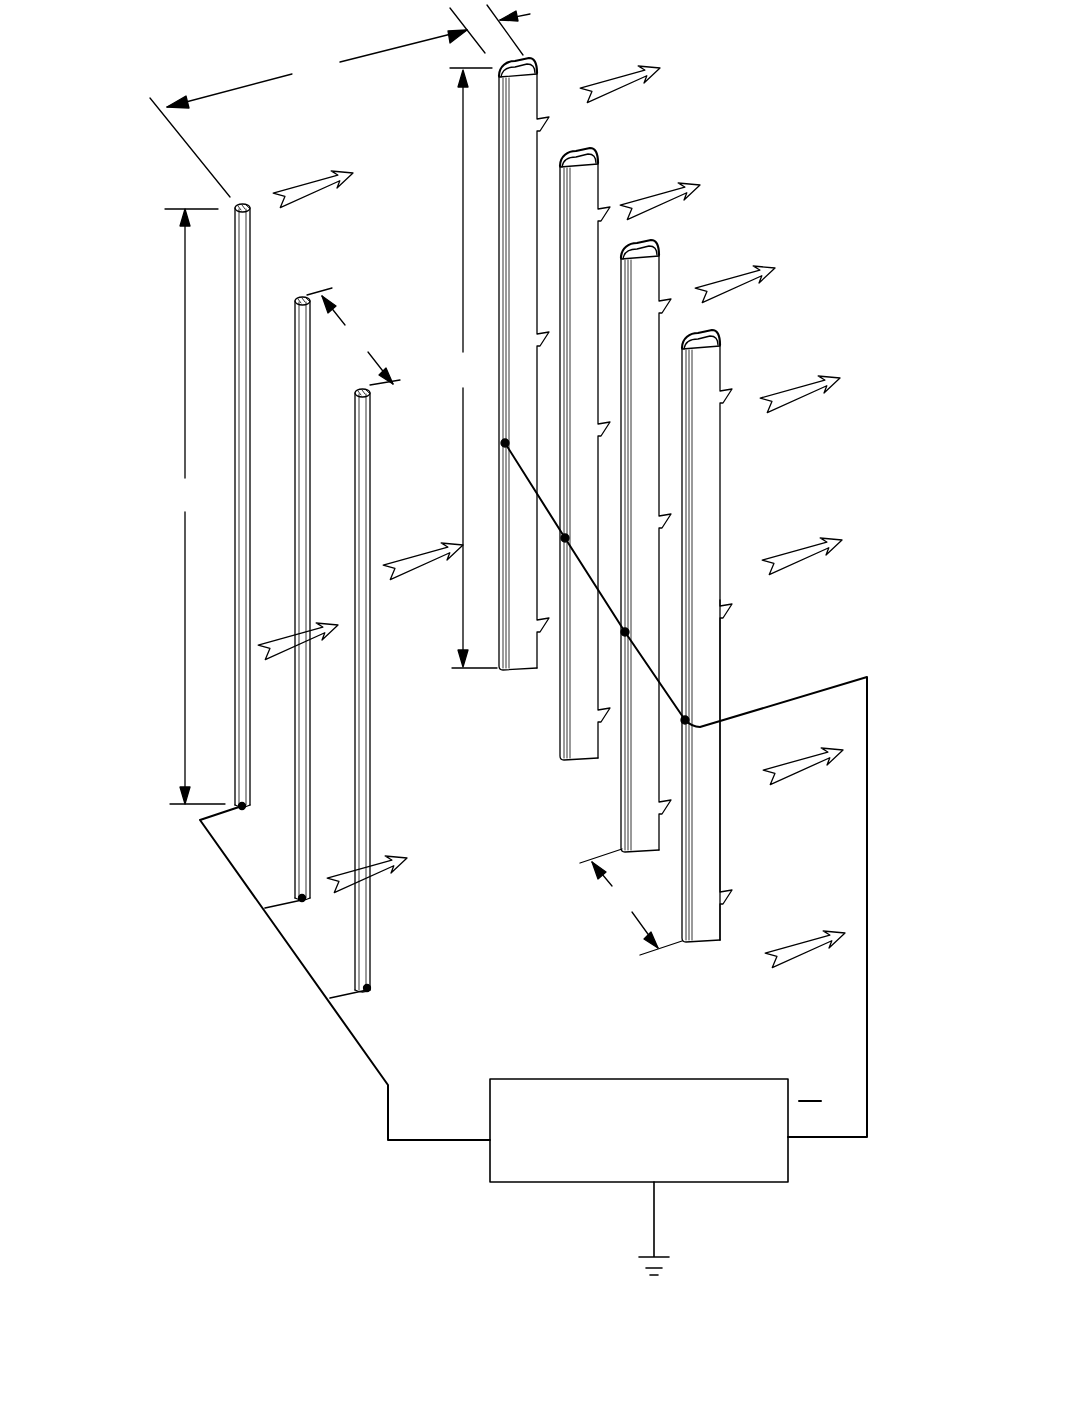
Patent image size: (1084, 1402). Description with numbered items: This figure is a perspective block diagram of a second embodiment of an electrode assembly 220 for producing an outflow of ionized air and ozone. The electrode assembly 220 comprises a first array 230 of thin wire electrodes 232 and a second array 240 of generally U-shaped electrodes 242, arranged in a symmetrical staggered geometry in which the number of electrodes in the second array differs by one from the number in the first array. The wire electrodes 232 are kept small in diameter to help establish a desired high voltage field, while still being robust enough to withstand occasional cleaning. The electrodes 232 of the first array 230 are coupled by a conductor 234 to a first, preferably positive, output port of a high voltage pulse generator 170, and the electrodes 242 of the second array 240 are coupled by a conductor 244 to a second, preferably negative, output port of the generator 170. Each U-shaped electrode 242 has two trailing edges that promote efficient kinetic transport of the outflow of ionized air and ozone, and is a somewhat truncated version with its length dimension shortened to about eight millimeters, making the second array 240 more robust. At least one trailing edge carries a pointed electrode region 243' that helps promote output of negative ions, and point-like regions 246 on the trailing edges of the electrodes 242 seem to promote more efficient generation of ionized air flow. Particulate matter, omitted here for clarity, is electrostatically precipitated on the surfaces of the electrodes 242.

The electrode assembly 220 is at (200, 53).
The first array 230 is at (130, 415).
The wire electrodes 232 is at (250, 270).
The conductor 234 is at (298, 970).
The second array 240 is at (432, 182).
The U-shaped electrodes 242 is at (597, 178).
The pointed electrode region 243' is at (774, 767).
The point-like regions 246 is at (733, 380).
The conductor 244 is at (870, 993).
The high voltage pulse generator 170 is at (657, 1077).